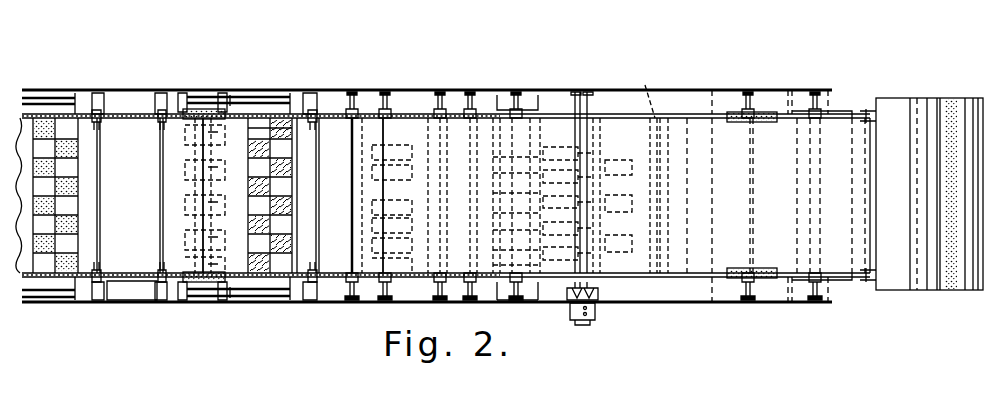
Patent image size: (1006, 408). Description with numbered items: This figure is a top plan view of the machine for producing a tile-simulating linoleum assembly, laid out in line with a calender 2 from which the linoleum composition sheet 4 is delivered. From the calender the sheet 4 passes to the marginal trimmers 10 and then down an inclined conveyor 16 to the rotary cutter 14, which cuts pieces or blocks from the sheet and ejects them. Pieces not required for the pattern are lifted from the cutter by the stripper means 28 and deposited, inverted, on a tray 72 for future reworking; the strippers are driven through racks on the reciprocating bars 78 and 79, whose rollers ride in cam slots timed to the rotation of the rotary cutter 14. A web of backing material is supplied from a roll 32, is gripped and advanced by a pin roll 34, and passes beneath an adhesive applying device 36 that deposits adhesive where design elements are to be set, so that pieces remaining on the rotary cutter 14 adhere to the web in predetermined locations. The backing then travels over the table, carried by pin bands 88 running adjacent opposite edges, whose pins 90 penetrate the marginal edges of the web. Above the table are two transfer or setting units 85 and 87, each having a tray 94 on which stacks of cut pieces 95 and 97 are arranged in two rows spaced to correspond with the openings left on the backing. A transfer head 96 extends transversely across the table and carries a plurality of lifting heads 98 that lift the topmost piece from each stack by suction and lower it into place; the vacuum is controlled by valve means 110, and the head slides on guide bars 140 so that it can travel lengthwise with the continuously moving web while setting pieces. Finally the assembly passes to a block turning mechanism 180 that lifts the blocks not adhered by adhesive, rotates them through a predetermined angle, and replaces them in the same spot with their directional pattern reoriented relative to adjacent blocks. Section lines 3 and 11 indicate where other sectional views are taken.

The calender 2 is at (955, 100).
The section line 3 is at (550, 82).
The sheet 4 is at (22, 142).
The marginal trimmers 10 is at (242, 82).
The section line 11 is at (330, 82).
The rotary cutter 14 is at (427, 82).
The inclined conveyor 16 is at (350, 182).
The stripper means 28 is at (630, 194).
The roll 32 is at (838, 111).
The pin roll 34 is at (765, 112).
The adhesive applying device 36 is at (687, 118).
The tray 72 is at (641, 166).
The reciprocating bar 78 is at (596, 316).
The reciprocating bar 79 is at (598, 308).
The transfer or setting unit 85 is at (270, 84).
The transfer or setting unit 87 is at (47, 84).
The pin bands 88 is at (125, 118).
The pins 90 is at (147, 123).
The tray 94 is at (292, 209).
The stacks of cut pieces 95 is at (300, 132).
The transfer head 96 is at (178, 184).
The stacks of cut pieces 97 is at (275, 153).
The lifting heads 98 is at (195, 248).
The valve means 110 is at (205, 82).
The guide bars 140 is at (274, 282).
The block turning mechanism 180 is at (420, 176).